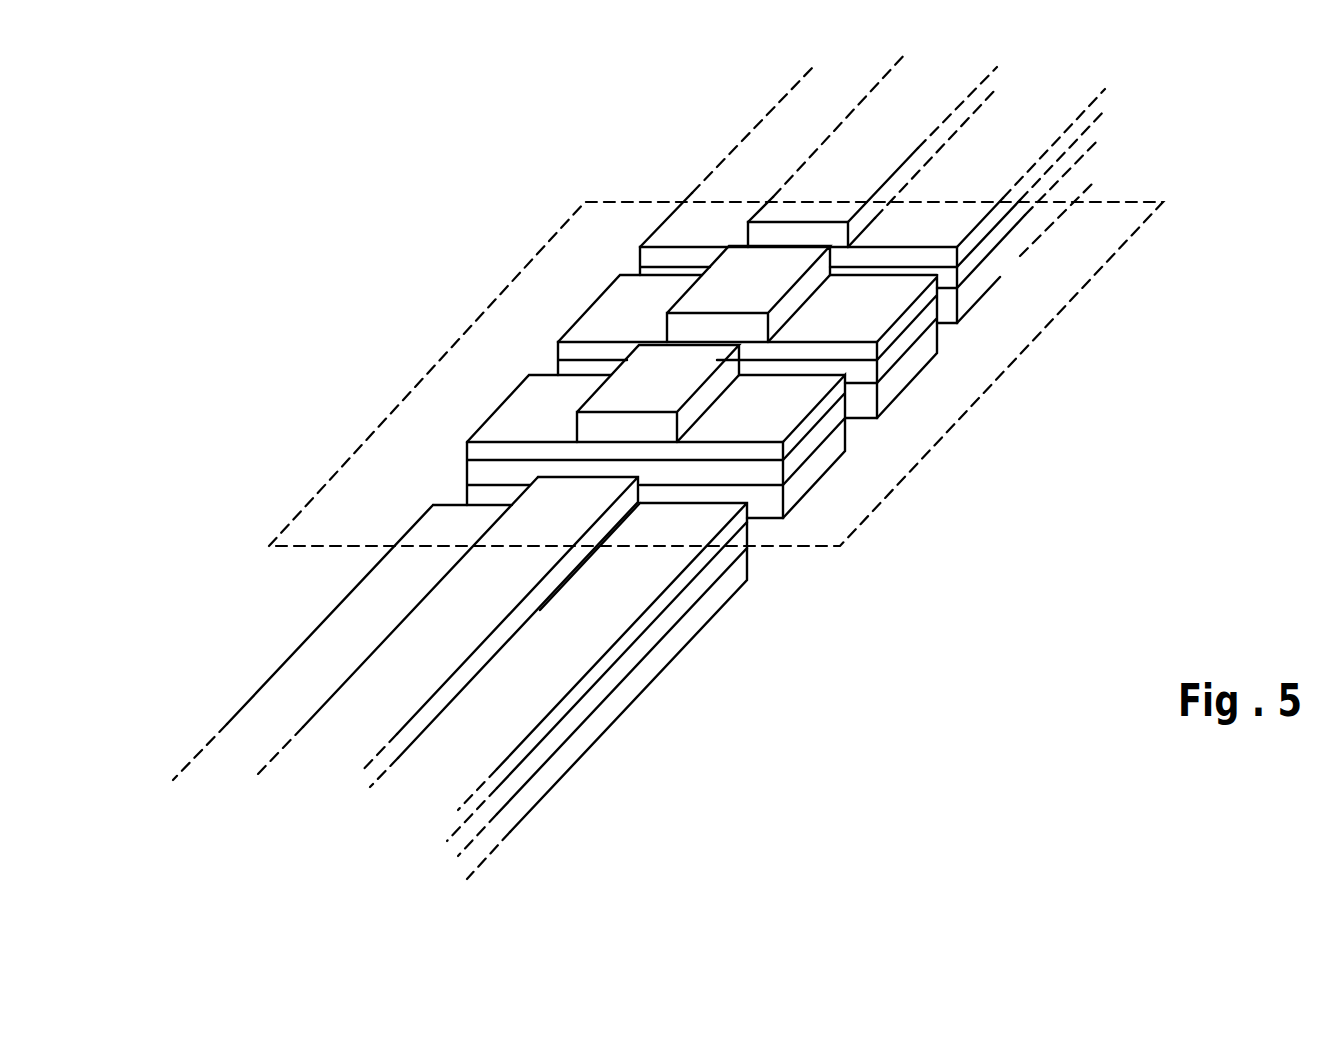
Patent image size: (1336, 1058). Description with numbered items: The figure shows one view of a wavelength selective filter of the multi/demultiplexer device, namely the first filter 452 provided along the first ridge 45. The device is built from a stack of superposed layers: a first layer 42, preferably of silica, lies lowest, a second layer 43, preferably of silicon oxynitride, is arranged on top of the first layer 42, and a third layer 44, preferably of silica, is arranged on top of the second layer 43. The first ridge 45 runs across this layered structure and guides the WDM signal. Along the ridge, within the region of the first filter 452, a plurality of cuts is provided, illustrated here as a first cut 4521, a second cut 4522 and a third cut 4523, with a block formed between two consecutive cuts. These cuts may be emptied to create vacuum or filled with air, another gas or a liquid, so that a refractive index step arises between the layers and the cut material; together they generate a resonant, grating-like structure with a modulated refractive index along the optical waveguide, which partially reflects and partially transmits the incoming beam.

The first layer 42 is at (608, 712).
The second layer 43 is at (715, 570).
The third layer 44 is at (648, 612).
The first ridge 45 is at (478, 600).
The first filter 452 is at (985, 378).
The first cut 4521 is at (440, 476).
The second cut 4522 is at (550, 358).
The third cut 4523 is at (628, 266).